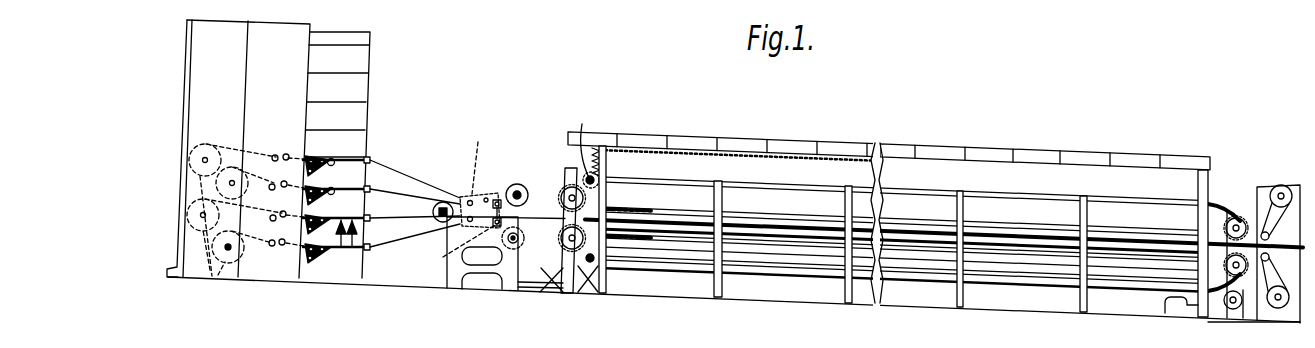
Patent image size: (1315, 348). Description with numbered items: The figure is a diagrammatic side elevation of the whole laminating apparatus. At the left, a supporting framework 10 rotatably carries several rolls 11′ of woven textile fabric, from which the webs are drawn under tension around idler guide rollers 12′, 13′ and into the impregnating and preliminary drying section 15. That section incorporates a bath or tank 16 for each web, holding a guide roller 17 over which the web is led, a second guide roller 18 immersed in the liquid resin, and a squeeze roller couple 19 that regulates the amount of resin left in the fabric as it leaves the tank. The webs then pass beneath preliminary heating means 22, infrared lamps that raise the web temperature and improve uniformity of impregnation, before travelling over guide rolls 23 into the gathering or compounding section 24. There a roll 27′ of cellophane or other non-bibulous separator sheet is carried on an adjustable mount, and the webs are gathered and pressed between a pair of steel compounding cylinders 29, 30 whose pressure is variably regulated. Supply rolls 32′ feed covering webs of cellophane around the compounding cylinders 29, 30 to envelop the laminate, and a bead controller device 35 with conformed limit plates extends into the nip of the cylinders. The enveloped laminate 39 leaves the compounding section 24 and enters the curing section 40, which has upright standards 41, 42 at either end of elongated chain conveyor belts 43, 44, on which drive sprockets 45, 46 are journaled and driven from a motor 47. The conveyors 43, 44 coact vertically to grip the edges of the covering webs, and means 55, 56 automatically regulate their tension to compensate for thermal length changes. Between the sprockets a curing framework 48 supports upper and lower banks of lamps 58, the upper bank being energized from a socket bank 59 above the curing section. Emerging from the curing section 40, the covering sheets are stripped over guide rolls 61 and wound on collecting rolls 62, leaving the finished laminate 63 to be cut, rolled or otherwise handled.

The supporting framework 10 is at (173, 278).
The rolls of woven textile fabric 11′ is at (212, 155).
The guide 12′ is at (270, 241).
The guide 13′ is at (283, 212).
The impregnating and preliminary drying section 15 is at (362, 63).
The bath or tank 16 is at (318, 280).
The guide roller 17 is at (304, 157).
The second guide roller 18 is at (323, 173).
The squeeze roller couple 19 is at (332, 159).
The preliminary heating means 22 is at (343, 237).
The guide rolls 23 is at (371, 160).
The gathering or compounding section 24 is at (467, 190).
The roll of cellophane or other non-bibulous sheet material 27′ is at (433, 211).
The steel compounding cylinder 29 is at (496, 199).
The steel compounding cylinder 30 is at (490, 253).
The supply rolls of covering material 32′ is at (518, 184).
The bead controller device 35 is at (481, 159).
The enveloped laminate 39 is at (536, 216).
The curing section 40 is at (826, 160).
The upright standard 41 is at (546, 289).
The upright standard 42 is at (1233, 310).
The chain conveyor belt 43 is at (581, 214).
The chain conveyor belt 44 is at (608, 210).
The drive sprocket 45 is at (562, 193).
The drive sprocket 46 is at (561, 242).
The motor 47 is at (1172, 310).
The curing framework or support 48 is at (822, 293).
The tension regulating means 55 is at (583, 182).
The tension regulating means 56 is at (566, 292).
The lamps 58 is at (655, 208).
The energized socket bank 59 is at (984, 153).
The guide rolls 61 is at (1262, 231).
The collecting rolls 62 is at (1282, 185).
The finished laminate 63 is at (1297, 323).